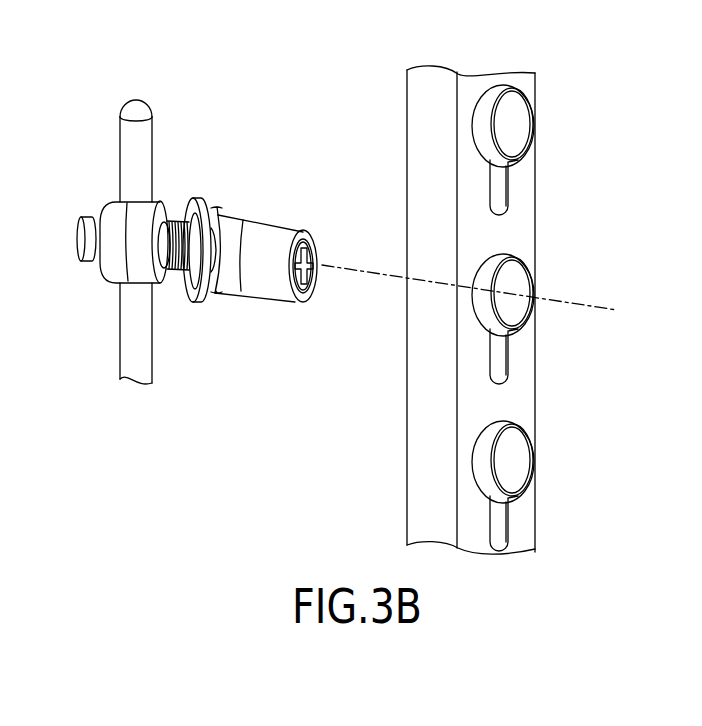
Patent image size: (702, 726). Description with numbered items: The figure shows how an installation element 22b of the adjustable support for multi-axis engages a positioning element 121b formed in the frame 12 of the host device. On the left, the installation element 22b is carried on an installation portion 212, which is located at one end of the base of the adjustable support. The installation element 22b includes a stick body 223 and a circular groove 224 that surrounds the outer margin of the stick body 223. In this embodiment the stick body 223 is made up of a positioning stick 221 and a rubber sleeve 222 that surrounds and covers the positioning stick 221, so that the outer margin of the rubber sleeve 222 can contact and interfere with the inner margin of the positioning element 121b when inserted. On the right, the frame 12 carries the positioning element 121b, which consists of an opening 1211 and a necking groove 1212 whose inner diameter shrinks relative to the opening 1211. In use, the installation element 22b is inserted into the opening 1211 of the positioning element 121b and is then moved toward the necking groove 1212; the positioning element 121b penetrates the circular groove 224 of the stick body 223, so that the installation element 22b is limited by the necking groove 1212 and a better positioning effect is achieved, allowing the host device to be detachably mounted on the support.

The frame 12 is at (493, 310).
The positioning element 121b is at (482, 315).
The opening 1211 is at (527, 283).
The necking groove 1212 is at (507, 365).
The installation portion 212 is at (130, 157).
The installation element 22b is at (175, 143).
The positioning stick 221 is at (184, 222).
The rubber sleeve 222 is at (263, 235).
The stick body 223 is at (297, 219).
The collar 224 is at (225, 207).